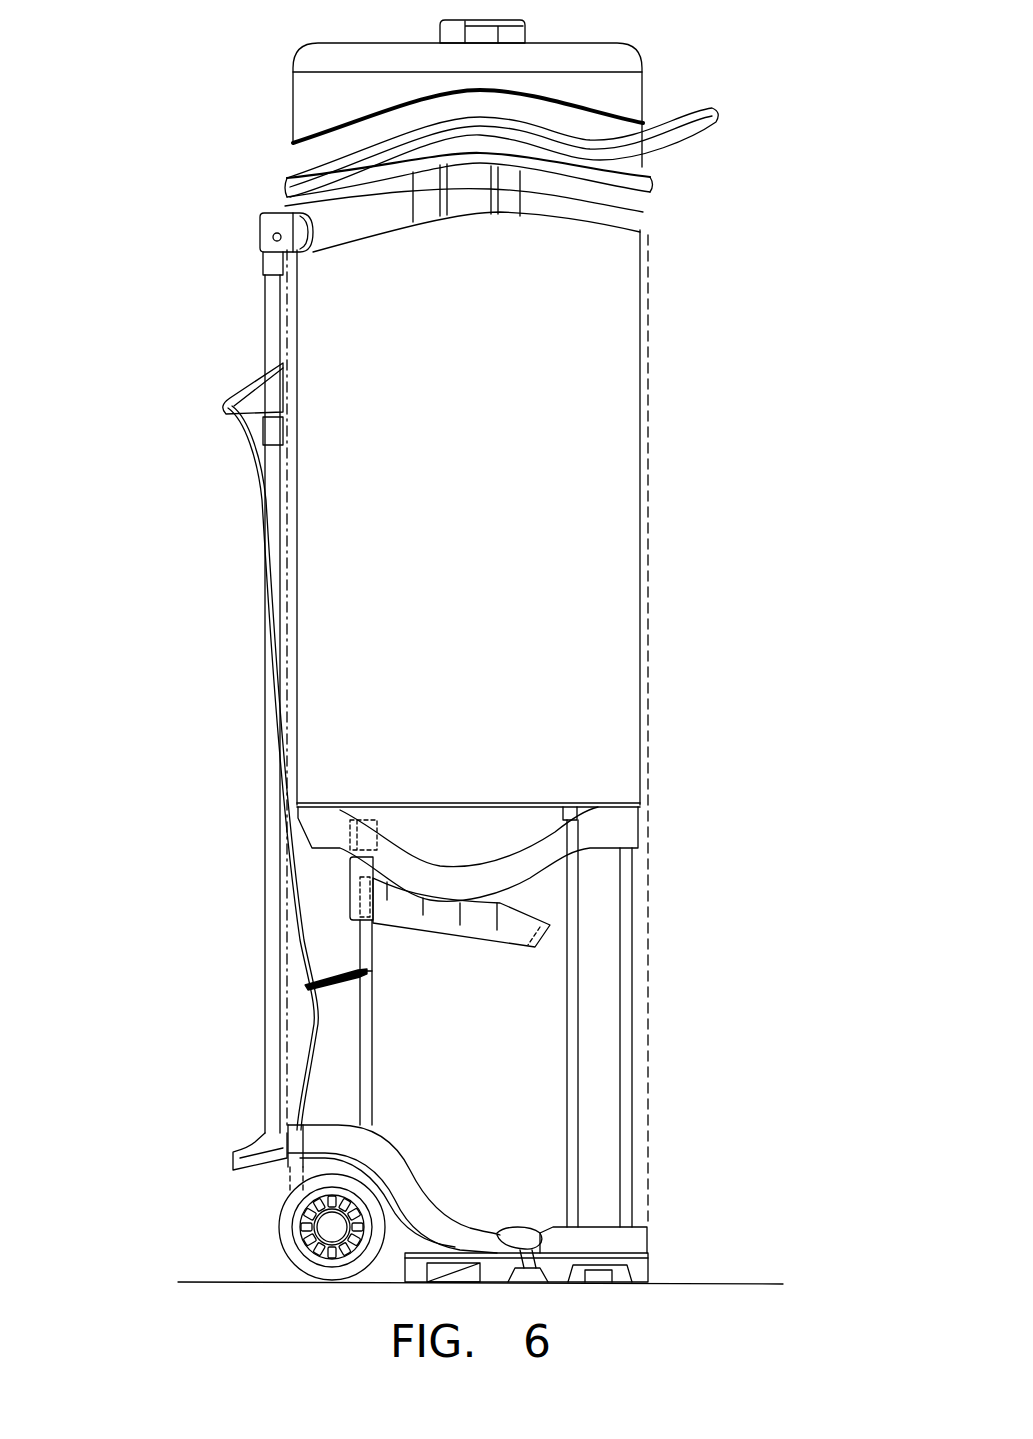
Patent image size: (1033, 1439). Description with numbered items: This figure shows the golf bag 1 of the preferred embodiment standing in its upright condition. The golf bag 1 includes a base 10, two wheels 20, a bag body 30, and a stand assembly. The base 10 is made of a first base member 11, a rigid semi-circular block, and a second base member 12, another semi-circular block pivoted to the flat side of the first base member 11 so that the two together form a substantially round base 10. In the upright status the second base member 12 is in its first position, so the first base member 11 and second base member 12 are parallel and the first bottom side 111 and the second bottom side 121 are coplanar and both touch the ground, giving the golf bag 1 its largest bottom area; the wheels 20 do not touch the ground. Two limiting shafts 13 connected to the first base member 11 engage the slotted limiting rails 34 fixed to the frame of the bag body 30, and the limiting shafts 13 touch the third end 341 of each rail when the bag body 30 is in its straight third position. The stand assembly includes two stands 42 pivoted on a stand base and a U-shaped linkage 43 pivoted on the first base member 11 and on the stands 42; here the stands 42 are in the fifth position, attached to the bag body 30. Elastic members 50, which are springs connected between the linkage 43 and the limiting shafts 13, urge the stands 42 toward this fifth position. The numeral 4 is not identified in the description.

The golf bag 1 is at (240, 48).
The bag body 30 is at (680, 366).
The handle assembly 4 is at (214, 356).
The stands 42 is at (277, 790).
The linkage 43 is at (258, 458).
The limiting rails 34 is at (530, 922).
The third end 341 is at (352, 870).
The elastic members 50 is at (312, 978).
The limiting shafts 13 is at (373, 1040).
The first base member 11 is at (412, 1178).
The wheels 20 is at (285, 1235).
The base 10 is at (648, 1208).
The second base member 12 is at (638, 1270).
The first bottom side 111 is at (385, 1283).
The second bottom side 121 is at (596, 1288).